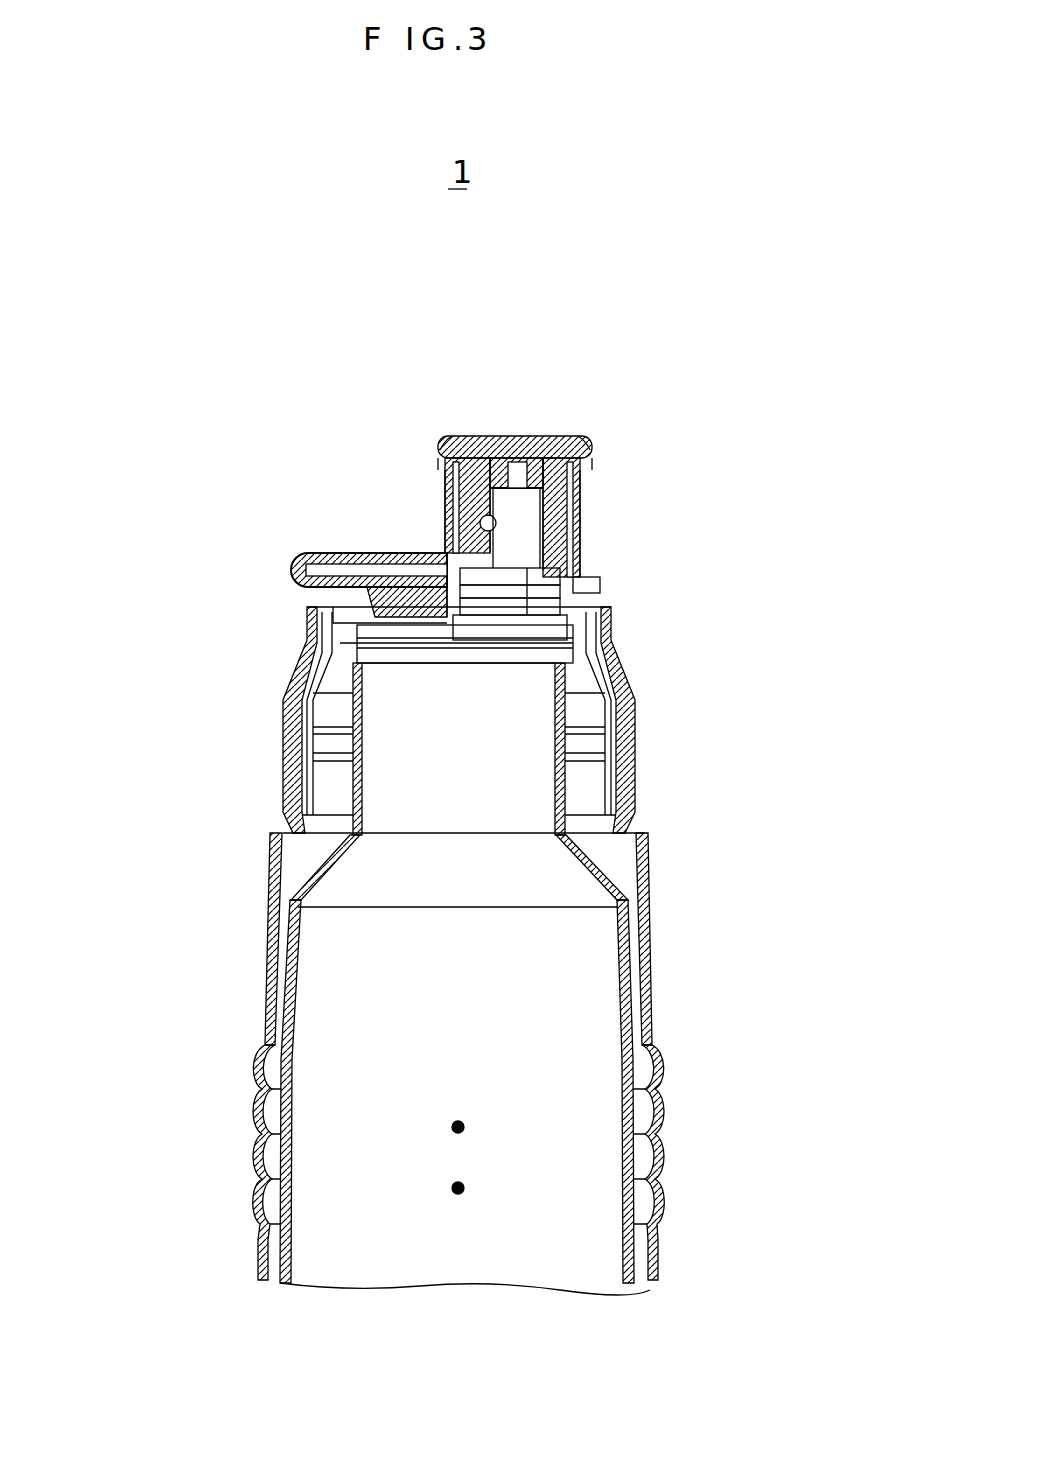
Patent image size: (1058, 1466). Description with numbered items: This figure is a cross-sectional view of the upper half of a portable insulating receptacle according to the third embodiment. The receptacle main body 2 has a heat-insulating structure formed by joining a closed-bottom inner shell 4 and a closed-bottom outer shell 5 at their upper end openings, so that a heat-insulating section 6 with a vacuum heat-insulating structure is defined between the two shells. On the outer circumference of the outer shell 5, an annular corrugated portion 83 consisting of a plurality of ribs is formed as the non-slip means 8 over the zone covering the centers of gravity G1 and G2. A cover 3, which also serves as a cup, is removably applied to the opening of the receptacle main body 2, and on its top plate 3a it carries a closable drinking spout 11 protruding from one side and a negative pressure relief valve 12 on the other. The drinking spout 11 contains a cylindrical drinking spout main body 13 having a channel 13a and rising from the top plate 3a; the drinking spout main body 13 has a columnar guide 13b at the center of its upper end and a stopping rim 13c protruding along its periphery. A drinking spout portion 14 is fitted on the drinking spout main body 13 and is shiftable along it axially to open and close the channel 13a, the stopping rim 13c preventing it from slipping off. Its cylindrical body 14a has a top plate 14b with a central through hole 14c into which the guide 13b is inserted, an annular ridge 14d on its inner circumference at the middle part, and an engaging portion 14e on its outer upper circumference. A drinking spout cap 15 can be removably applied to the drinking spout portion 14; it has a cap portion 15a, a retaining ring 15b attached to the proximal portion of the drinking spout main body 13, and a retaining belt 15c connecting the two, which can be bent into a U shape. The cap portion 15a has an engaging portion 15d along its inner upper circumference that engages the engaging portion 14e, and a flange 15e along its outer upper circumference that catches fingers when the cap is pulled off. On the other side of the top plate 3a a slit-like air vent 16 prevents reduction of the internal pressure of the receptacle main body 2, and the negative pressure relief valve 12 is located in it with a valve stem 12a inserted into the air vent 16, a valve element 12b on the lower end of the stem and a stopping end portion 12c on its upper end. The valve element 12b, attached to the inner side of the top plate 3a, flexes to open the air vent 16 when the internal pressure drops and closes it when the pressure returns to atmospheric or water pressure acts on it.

The receptacle main body 2 is at (668, 951).
The cover 3 is at (636, 733).
The top plate 3a is at (333, 600).
The inner shell 4 is at (293, 943).
The outer shell 5 is at (272, 943).
The heat-insulating section 6 is at (297, 860).
The non-slip means 8 is at (677, 1103).
The corrugated portion 83 is at (662, 1162).
The drinking spout 11 is at (545, 425).
The negative pressure relief valve 12 is at (420, 605).
The valve stem 12a is at (460, 605).
The valve element 12b is at (368, 605).
The stopping end portion 12c is at (395, 585).
The drinking spout main body 13 is at (595, 568).
The channel 13a is at (527, 515).
The guide 13b is at (487, 437).
The stopping rim 13c is at (582, 490).
The drinking spout portion 14 is at (580, 515).
The cylindrical body 14a is at (583, 530).
The top plate 14b is at (480, 440).
The through hole 14c is at (497, 437).
The annular ridge 14d is at (430, 497).
The engaging portion 14e is at (575, 447).
The drinking spout cap 15 is at (445, 498).
The cap portion 15a is at (447, 480).
The retaining ring 15b is at (600, 587).
The retaining belt 15c is at (303, 557).
The engaging portion 15d is at (447, 437).
The flange 15e is at (582, 480).
The air vent 16 is at (410, 605).
The center of gravity G1 is at (458, 1188).
The center of gravity G2 is at (458, 1127).